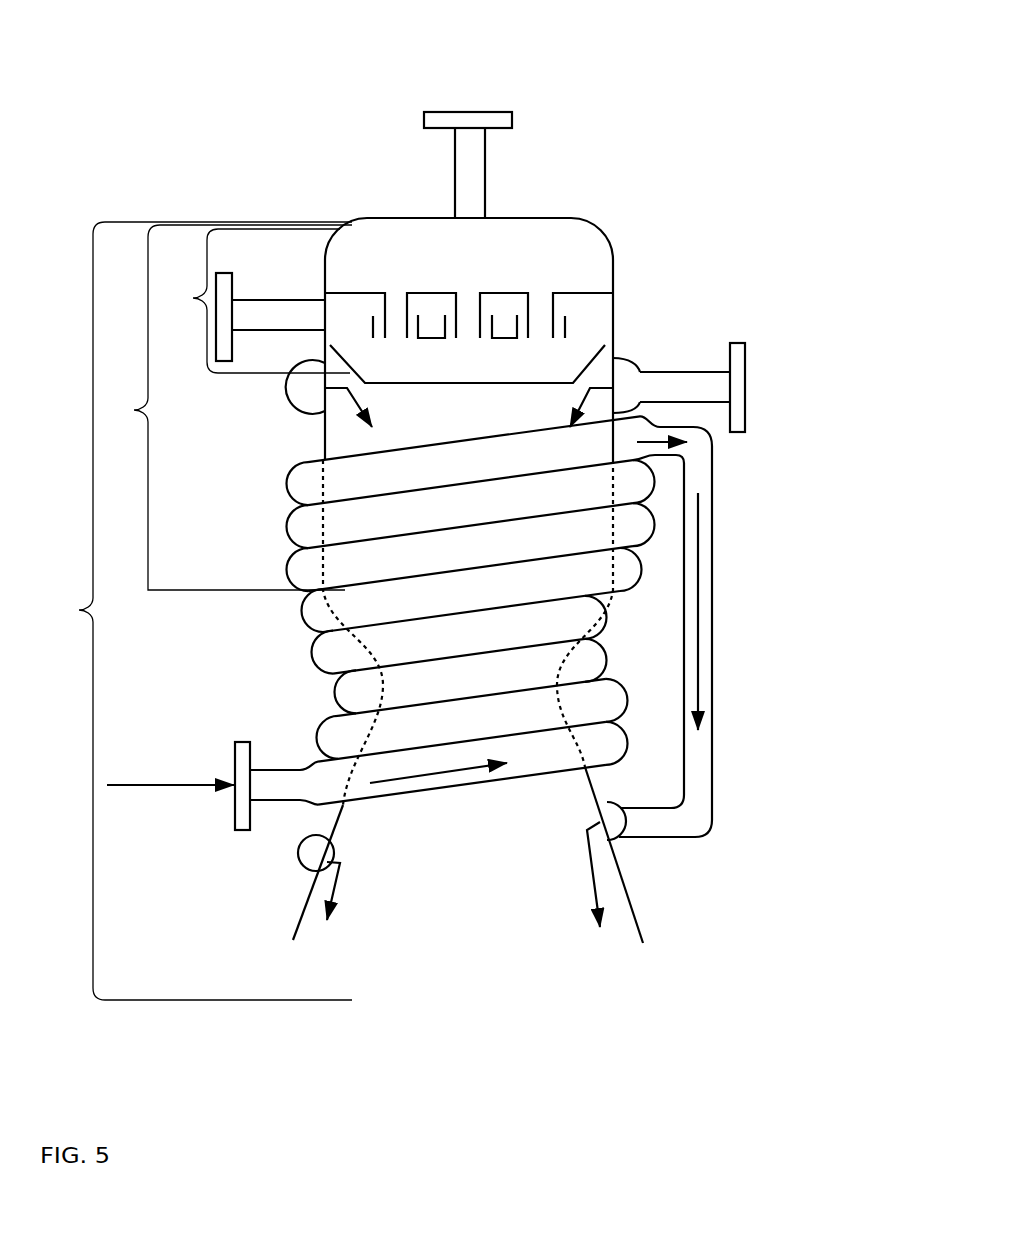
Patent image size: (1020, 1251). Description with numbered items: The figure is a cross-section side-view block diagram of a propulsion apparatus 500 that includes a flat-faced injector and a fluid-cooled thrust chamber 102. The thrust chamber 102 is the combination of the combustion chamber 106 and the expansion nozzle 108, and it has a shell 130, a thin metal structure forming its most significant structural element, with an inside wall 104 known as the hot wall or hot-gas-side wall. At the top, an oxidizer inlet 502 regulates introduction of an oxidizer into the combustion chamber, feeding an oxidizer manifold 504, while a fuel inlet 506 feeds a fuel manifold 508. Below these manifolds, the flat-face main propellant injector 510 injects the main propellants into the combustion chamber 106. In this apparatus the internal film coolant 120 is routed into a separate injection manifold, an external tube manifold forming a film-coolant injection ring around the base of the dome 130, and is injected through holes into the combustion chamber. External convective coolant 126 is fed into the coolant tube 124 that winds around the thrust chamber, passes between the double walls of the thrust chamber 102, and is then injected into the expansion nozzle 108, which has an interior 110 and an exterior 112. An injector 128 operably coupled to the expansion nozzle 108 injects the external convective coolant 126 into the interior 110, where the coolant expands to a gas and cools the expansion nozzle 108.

The thrust chamber 102 is at (195, 611).
The inside wall 104 is at (368, 220).
The combustion chamber 106 is at (354, 515).
The expansion nozzle 108 is at (488, 902).
The interior 110 is at (300, 893).
The exterior 112 is at (327, 835).
The internal film coolant 120 is at (597, 385).
The coolant tube 124 is at (290, 525).
The external convective coolant 126 is at (587, 897).
The injector 128 is at (243, 740).
The shell 130 is at (250, 301).
The propulsion apparatus 500 is at (735, 1096).
The oxidizer inlet 502 is at (580, 82).
The oxidizer manifold 504 is at (338, 236).
The fuel inlet 506 is at (270, 330).
The fuel manifold 508 is at (613, 315).
The flat-face main propellant injector 510 is at (490, 434).